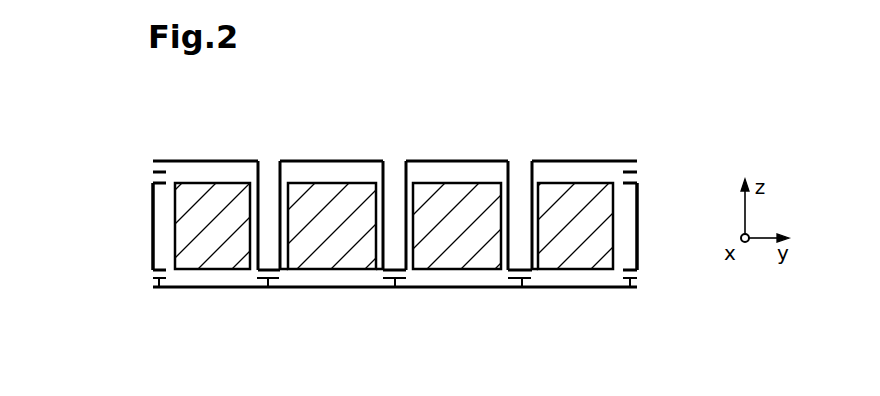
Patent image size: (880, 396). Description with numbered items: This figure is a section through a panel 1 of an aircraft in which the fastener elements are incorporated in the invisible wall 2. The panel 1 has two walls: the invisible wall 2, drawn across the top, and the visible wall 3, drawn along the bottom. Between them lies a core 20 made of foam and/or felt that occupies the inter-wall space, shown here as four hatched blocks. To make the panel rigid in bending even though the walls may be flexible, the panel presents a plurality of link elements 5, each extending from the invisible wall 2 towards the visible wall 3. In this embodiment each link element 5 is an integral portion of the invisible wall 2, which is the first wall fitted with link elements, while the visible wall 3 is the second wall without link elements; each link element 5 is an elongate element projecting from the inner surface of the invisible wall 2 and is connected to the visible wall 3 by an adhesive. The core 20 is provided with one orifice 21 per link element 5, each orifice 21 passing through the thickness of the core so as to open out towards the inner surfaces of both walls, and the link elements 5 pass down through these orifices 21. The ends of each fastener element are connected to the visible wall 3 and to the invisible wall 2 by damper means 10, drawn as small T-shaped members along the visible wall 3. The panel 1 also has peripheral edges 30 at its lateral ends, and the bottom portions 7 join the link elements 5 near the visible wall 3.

The panel 1 is at (677, 113).
The invisible wall 2 is at (205, 160).
The visible wall 3 is at (323, 289).
The link element 5 is at (262, 163).
The bottom portion of cover 7 is at (258, 270).
The damper means 10 is at (160, 288).
The core 20 is at (620, 222).
The orifice 21 is at (283, 270).
The peripheral edge 30 is at (153, 223).